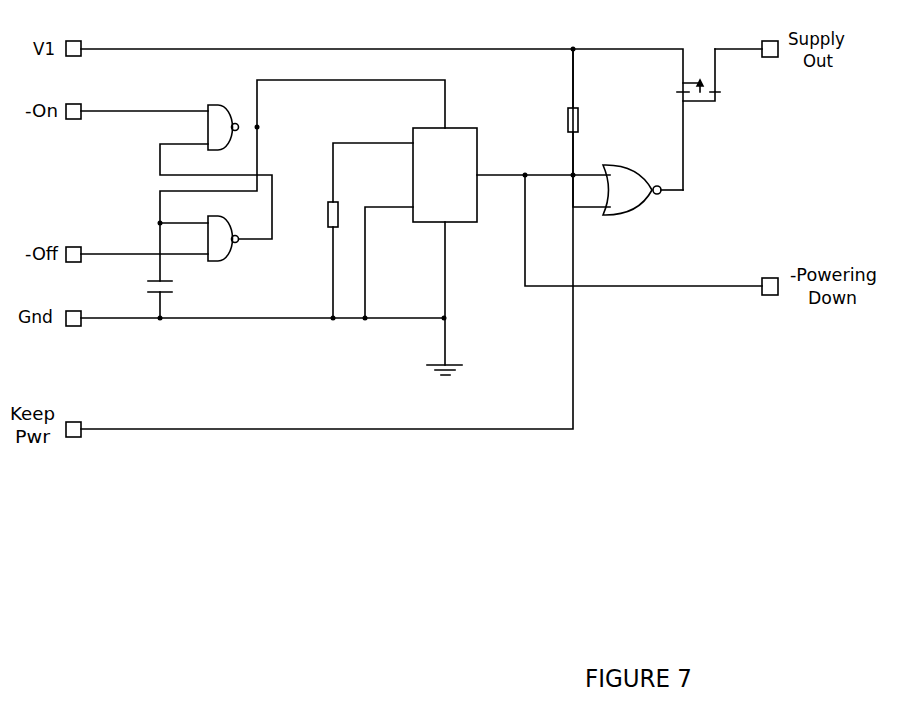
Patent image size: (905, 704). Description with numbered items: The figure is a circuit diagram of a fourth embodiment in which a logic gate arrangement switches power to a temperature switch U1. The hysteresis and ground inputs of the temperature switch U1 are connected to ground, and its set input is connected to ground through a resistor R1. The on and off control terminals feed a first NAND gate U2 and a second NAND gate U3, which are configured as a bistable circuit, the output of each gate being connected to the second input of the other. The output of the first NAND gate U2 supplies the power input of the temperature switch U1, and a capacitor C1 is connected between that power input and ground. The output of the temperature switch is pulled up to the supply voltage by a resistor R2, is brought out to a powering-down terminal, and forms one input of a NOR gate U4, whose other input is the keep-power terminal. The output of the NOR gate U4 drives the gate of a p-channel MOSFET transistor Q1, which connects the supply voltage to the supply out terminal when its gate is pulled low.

The MAX6509 temperature switch U1 is at (443, 176).
The first NAND gate U2 is at (225, 118).
The second NAND gate U3 is at (231, 245).
The NOR gate U4 is at (643, 200).
The resistor R1 is at (320, 214).
The resistor R2 is at (588, 120).
The capacitor C1 is at (147, 288).
The p-channel MOSFET transistor Q1 is at (686, 72).